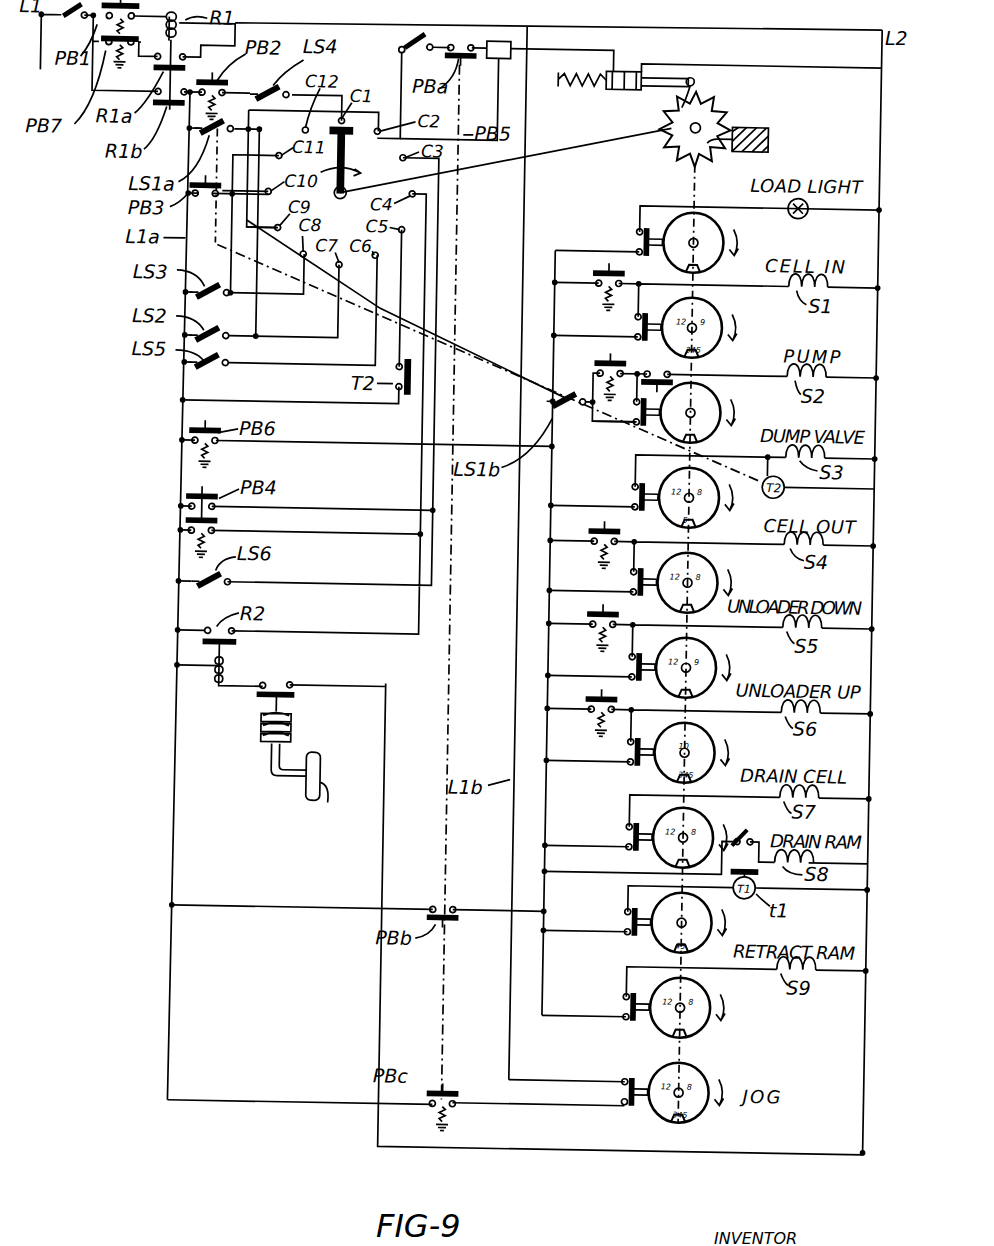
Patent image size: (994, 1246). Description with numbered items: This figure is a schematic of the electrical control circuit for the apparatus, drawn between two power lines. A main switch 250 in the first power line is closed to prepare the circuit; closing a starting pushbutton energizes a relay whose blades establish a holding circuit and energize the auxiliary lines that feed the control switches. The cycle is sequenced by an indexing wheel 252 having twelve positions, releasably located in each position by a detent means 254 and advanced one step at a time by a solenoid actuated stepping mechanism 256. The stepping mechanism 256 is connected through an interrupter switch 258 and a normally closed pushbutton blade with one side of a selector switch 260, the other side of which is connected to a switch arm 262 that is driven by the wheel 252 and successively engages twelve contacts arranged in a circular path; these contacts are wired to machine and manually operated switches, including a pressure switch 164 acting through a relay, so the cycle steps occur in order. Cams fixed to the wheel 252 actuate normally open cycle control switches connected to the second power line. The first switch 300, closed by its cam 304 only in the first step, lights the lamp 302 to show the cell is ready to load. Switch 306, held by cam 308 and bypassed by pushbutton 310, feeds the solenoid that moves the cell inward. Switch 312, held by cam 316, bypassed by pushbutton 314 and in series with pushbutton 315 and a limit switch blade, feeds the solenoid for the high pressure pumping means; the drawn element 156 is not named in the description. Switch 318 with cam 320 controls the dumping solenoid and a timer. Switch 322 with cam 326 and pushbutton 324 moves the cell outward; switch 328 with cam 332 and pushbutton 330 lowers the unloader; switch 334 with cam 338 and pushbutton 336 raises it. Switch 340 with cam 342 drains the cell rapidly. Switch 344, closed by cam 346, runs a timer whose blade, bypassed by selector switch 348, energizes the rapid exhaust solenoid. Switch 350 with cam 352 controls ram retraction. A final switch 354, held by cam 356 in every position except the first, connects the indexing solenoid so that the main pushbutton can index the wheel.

The main switch 250 is at (65, 22).
The indexing wheel 252 is at (715, 110).
The detent means 254 is at (746, 124).
The solenoid actuated stepping mechanism 256 is at (630, 86).
The interrupter switch 258 is at (498, 54).
The selector switch 260 is at (404, 48).
The switch arm 262 is at (445, 173).
The first switch 300 is at (638, 224).
The lamp 302 is at (802, 206).
The cam 304 is at (726, 226).
The switch 306 is at (632, 316).
The cam 308 is at (724, 306).
The normally open pushbutton 310 is at (610, 260).
The switch 312 is at (636, 416).
The normally open pushbutton switch 314 is at (612, 350).
The normally closed pushbutton switch 315 is at (684, 364).
The cam 316 is at (726, 394).
The switch 318 is at (632, 480).
The cam 320 is at (728, 494).
The switch 322 is at (630, 570).
The normally open pushbutton 324 is at (600, 522).
The cam 326 is at (726, 562).
The switch 328 is at (628, 654).
The normally open pushbutton 330 is at (602, 608).
The cam 332 is at (724, 642).
The switch 334 is at (628, 738).
The normally open pushbutton 336 is at (598, 694).
The cam 338 is at (726, 728).
The switch 340 is at (630, 824).
The cam 342 is at (668, 834).
The switch 344 is at (632, 906).
The cam 346 is at (666, 930).
The selector switch 348 is at (758, 812).
The switch 350 is at (638, 1004).
The cam 352 is at (724, 1016).
The final switch 354 is at (638, 1098).
The cam 356 is at (714, 1110).
The pressure switch 164 is at (274, 700).
The plunger rod 156 is at (324, 789).